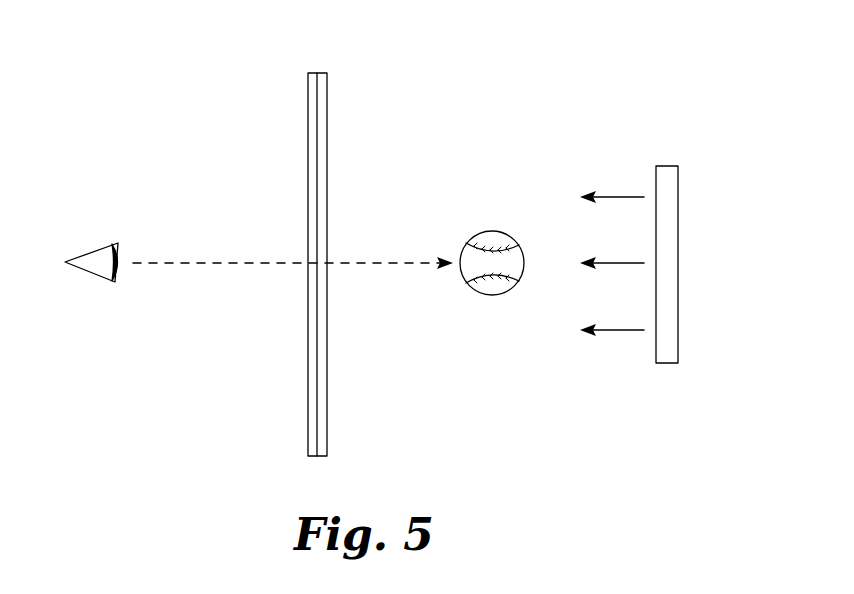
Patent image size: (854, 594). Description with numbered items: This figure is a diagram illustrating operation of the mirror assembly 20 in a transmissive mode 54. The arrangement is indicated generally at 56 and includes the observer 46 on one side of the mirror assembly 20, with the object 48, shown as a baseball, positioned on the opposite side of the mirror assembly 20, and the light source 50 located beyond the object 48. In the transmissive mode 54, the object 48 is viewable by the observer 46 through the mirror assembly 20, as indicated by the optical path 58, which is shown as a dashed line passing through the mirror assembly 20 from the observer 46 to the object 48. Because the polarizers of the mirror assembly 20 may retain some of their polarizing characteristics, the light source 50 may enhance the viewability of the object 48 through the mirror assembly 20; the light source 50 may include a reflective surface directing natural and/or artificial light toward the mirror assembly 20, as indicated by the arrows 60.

The mirror assembly 20 is at (366, 56).
The observer 46 is at (92, 256).
The object 48 is at (487, 231).
The light source 50 is at (680, 188).
The transmissive mode 54 is at (299, 81).
The viewing direction 56 is at (136, 66).
The optical path 58 is at (195, 264).
The arrows 60 is at (617, 262).